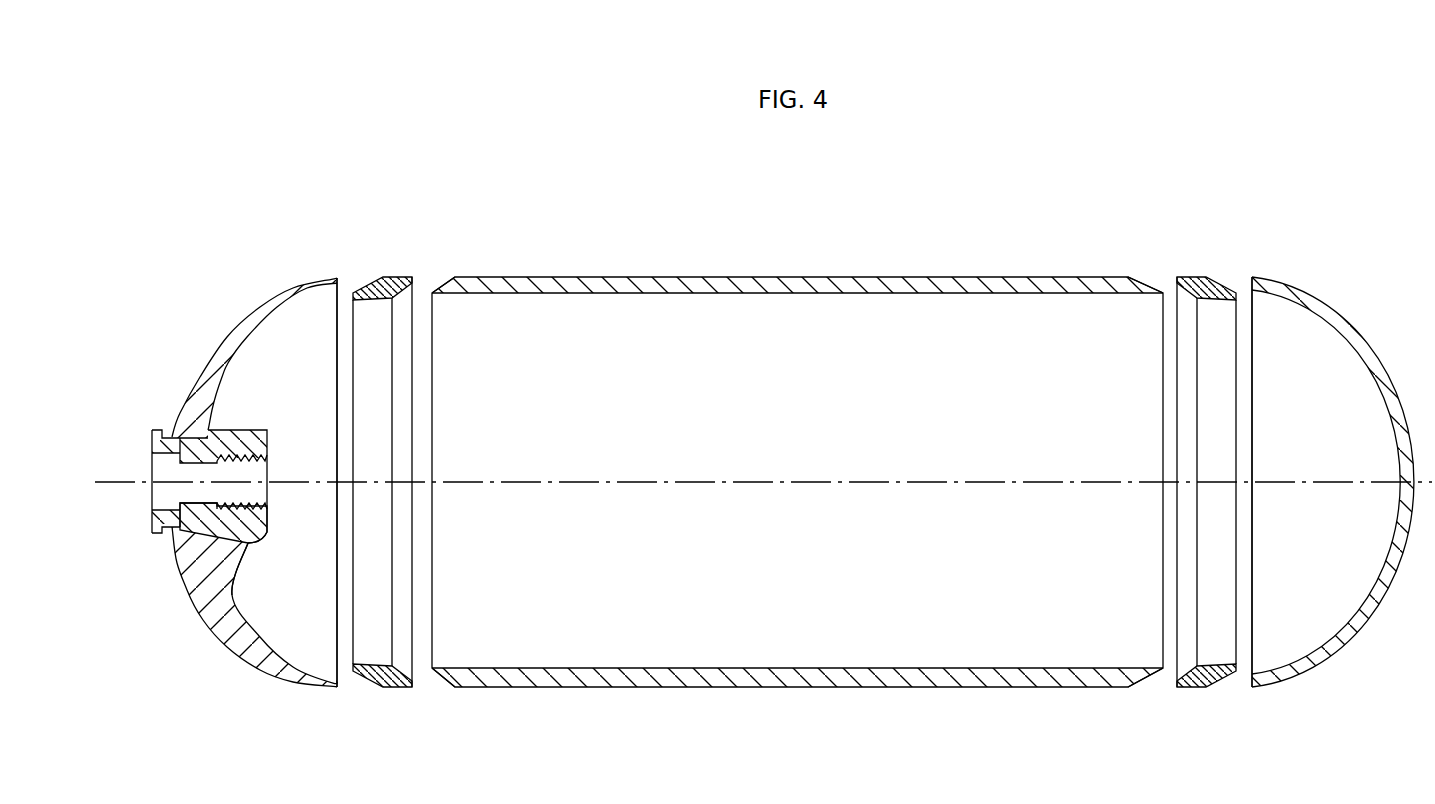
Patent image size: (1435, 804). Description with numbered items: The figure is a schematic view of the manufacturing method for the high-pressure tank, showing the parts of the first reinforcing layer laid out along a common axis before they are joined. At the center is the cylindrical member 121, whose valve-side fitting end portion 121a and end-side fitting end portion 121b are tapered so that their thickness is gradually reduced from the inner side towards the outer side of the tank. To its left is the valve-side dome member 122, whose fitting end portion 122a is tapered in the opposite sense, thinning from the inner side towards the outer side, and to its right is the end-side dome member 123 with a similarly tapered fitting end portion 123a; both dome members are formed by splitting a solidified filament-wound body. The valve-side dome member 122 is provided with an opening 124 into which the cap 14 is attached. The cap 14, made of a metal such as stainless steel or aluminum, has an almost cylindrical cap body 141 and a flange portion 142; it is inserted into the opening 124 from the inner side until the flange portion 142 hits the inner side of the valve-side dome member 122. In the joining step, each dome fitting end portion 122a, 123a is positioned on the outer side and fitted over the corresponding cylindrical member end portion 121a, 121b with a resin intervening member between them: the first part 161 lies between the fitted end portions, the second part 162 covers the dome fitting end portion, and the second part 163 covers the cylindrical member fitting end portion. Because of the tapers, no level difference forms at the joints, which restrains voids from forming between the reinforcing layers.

The cap 14 is at (88, 640).
The cap body 141 is at (180, 537).
The flange portion 142 is at (223, 557).
The cylindrical member 121 is at (841, 279).
The valve-side fitting end portion 121a is at (460, 283).
The end-side fitting end portion 121b is at (1132, 279).
The valve-side dome member 122 is at (240, 328).
The fitting end portion 122a is at (323, 278).
The end-side dome member 123 is at (1357, 327).
The fitting end portion 123a is at (1257, 279).
The opening 124 is at (151, 447).
The first part 161 is at (378, 676).
The second part 162 is at (395, 690).
The second part 163 is at (378, 666).